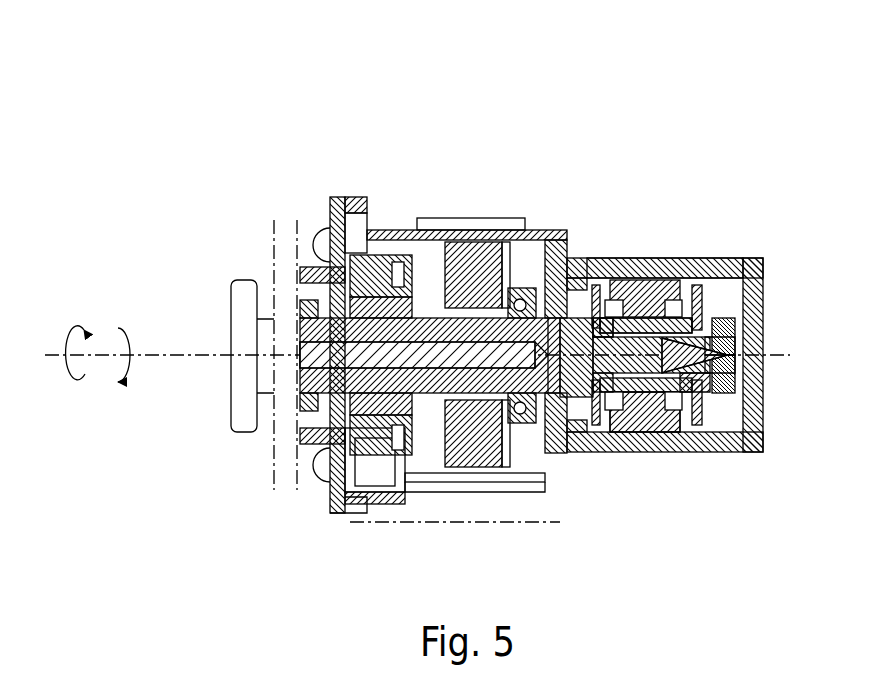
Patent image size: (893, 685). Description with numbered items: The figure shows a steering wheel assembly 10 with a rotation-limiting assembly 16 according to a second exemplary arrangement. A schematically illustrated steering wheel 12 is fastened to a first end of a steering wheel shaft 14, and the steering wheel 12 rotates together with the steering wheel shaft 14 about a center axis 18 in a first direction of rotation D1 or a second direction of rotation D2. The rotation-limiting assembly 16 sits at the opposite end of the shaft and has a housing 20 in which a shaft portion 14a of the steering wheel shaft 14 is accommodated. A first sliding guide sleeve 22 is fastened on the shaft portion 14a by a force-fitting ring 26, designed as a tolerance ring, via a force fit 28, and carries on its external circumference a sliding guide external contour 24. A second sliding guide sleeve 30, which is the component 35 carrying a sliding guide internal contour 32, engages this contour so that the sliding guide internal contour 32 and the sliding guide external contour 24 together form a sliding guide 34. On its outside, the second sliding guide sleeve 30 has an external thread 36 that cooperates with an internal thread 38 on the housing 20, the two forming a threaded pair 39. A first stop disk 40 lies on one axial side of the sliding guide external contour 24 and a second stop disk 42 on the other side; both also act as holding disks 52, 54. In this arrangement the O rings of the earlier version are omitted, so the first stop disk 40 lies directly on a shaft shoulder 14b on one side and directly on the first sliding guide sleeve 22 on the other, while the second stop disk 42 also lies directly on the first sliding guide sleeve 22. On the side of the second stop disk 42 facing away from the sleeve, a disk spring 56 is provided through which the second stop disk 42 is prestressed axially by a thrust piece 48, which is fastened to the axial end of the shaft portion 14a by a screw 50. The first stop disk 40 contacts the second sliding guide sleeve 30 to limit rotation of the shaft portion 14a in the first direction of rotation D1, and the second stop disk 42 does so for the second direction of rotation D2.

The steering wheel assembly 10 is at (670, 102).
The steering wheel 12 is at (245, 300).
The steering wheel shaft 14 is at (268, 335).
The shaft portion 14a is at (702, 372).
The shaft shoulder 14b is at (566, 298).
The rotation-limiting assembly 16 is at (725, 140).
The center axis 18 is at (213, 355).
The housing 20 is at (730, 314).
The first sliding guide sleeve 22 is at (705, 397).
The sliding guide external contour 24 is at (702, 400).
The force-fitting ring 26 is at (612, 395).
The force fit 28 is at (725, 372).
The second sliding guide sleeve 30 is at (672, 292).
The component 35 is at (646, 325).
The sliding guide internal contour 32 is at (632, 300).
The sliding guide 34 is at (630, 410).
The external thread 36 is at (660, 300).
The internal thread 38 is at (612, 298).
The threaded pair 39 is at (643, 250).
The first stop disk 40 is at (597, 400).
The holding disk 52 is at (603, 327).
The second stop disk 42 is at (697, 413).
The holding disk 54 is at (645, 412).
The thrust piece 48 is at (722, 382).
The screw 50 is at (735, 352).
The disk spring 56 is at (752, 300).
The first direction of rotation D1 is at (128, 325).
The second direction of rotation D2 is at (78, 325).